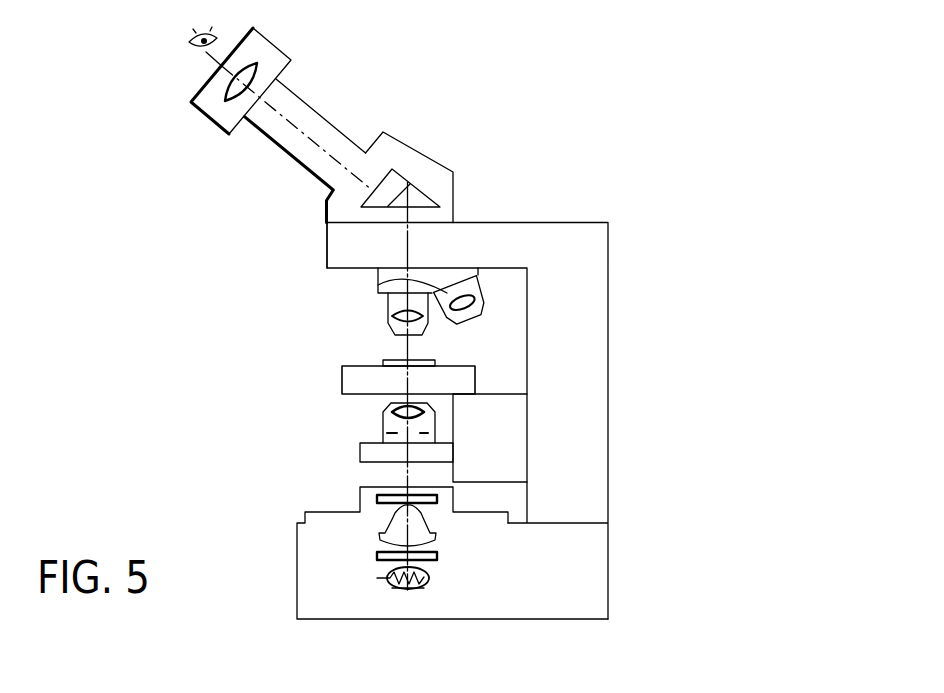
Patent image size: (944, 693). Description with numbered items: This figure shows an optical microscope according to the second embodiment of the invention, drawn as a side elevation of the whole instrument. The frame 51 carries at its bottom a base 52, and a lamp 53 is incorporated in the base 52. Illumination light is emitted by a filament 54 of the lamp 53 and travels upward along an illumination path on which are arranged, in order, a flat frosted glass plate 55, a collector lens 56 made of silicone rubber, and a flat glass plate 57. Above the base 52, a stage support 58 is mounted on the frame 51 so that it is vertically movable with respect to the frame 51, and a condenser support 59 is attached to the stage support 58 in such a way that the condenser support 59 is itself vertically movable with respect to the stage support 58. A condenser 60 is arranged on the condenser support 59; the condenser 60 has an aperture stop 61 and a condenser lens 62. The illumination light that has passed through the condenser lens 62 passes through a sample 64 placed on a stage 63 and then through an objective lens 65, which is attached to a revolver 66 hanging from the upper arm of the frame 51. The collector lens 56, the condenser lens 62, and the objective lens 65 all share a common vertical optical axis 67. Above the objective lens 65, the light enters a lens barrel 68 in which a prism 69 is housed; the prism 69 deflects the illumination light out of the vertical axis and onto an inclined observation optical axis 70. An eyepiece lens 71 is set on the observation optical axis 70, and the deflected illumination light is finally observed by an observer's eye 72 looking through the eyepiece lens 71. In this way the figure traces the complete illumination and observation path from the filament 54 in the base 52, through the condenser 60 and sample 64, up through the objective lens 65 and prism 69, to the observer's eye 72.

The frame 51 is at (583, 261).
The base 52 is at (588, 577).
The lamp 53 is at (430, 582).
The filament 54 is at (383, 588).
The flat frosted glass plate 55 is at (377, 555).
The collector lens 56 is at (377, 540).
The flat glass plate 57 is at (378, 500).
The stage support 58 is at (503, 417).
The condenser support 59 is at (365, 450).
The condenser 60 is at (392, 422).
The aperture stop 61 is at (393, 435).
The condenser lens 62 is at (390, 408).
The stage 63 is at (352, 366).
The sample 64 is at (388, 358).
The objective lens 65 is at (388, 304).
The revolver 66 is at (452, 277).
The optical axis 67 is at (407, 243).
The lens barrel 68 is at (393, 147).
The prism 69 is at (420, 193).
The observation optical axis 70 is at (298, 123).
The eyepiece lens 71 is at (264, 50).
The observer's eye 72 is at (189, 40).